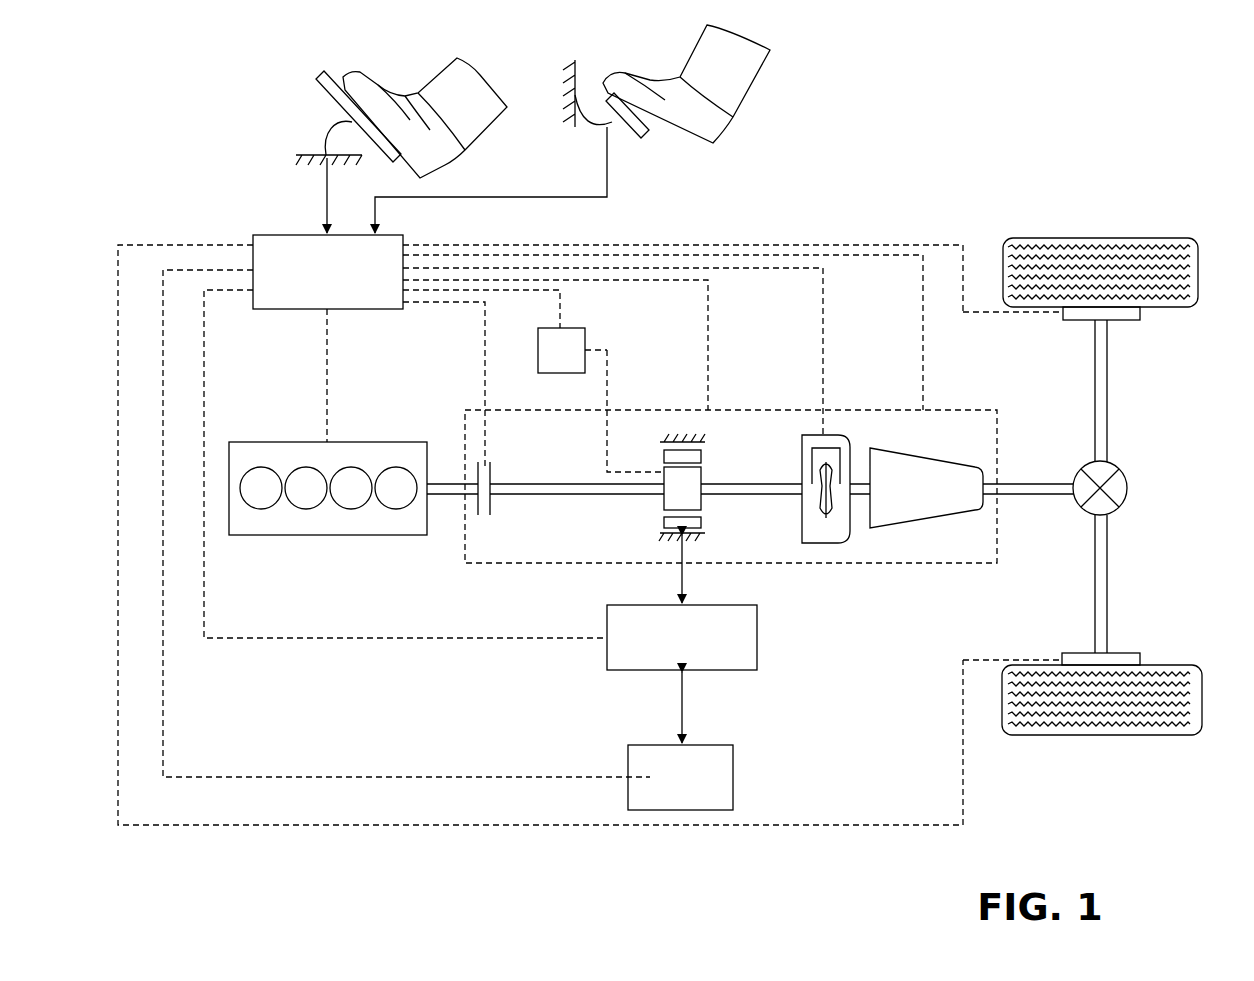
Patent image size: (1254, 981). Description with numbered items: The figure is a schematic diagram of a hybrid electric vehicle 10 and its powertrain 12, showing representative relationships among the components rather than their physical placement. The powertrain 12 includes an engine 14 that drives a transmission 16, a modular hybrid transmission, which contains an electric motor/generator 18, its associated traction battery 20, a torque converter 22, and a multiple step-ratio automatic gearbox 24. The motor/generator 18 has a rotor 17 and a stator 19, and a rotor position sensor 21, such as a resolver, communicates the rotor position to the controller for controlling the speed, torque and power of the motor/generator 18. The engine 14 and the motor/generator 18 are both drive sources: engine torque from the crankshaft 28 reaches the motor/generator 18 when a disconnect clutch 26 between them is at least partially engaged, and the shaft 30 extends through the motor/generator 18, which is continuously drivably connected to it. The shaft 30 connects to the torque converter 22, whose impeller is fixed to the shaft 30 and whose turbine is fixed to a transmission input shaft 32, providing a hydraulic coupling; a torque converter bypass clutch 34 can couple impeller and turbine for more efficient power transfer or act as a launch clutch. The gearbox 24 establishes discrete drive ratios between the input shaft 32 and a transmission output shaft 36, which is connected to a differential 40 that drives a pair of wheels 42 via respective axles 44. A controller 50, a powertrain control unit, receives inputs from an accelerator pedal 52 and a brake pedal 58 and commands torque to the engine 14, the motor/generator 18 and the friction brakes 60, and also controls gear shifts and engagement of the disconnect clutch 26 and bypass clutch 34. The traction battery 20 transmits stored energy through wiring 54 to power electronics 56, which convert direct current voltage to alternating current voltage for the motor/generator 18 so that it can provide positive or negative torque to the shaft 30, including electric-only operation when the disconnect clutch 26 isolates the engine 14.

The hybrid electric vehicle 10 is at (857, 150).
The powertrain 12 is at (474, 662).
The engine 14 is at (283, 442).
The transmission 16 is at (790, 410).
The rotor 17 is at (660, 505).
The electric motor/generator (M/G) 18 is at (681, 431).
The stator 19 is at (705, 455).
The traction battery 20 is at (733, 775).
The rotor position sensor 21 is at (585, 338).
The torque converter 22 is at (820, 543).
The gearbox 24 is at (925, 522).
The disconnect clutch 26 is at (495, 475).
The crankshaft 28 is at (455, 480).
The M/G shaft 30 is at (535, 496).
The transmission input shaft 32 is at (858, 480).
The torque converter bypass clutch 34 is at (826, 440).
The transmission output shaft 36 is at (1040, 482).
The differential 40 is at (1128, 490).
The wheels 42 is at (1100, 238).
The axles 44 is at (1109, 388).
The controller 50 is at (290, 235).
The accelerator pedal 52 is at (330, 112).
The wiring 54 is at (685, 715).
The power electronics 56 is at (757, 635).
The brake pedal 58 is at (640, 130).
The friction brakes 60 is at (1143, 312).